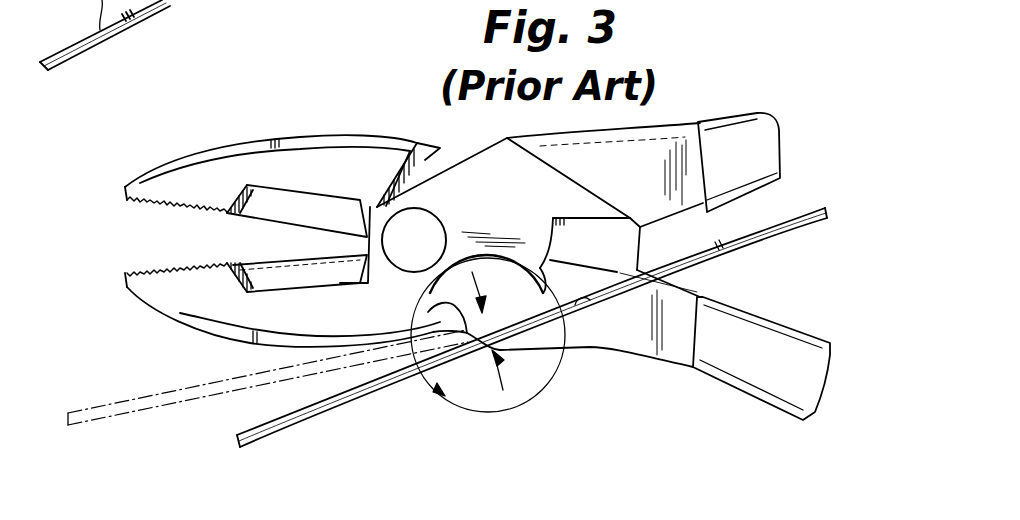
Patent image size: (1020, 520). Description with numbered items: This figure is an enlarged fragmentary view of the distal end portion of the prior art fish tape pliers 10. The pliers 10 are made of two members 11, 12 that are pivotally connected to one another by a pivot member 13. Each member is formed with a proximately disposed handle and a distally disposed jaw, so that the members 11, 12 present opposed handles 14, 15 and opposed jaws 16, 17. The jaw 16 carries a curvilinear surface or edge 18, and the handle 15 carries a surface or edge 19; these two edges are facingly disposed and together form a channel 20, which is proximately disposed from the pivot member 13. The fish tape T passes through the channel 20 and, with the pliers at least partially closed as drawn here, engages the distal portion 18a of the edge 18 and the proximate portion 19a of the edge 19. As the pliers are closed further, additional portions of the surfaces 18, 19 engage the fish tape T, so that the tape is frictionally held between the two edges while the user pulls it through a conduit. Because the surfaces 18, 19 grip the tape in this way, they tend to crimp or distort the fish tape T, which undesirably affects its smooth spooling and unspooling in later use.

The fish tape pliers 10 is at (333, 108).
The member 11 is at (223, 143).
The member 12 is at (180, 318).
The pivot member 13 is at (438, 232).
The handle 14 is at (778, 327).
The handle 15 is at (737, 132).
The jaw 16 is at (163, 175).
The jaw 17 is at (147, 274).
The curvilinear surface or edge 18 is at (513, 258).
The distal portion of edge 18a is at (428, 310).
The surface or edge 19 is at (583, 292).
The proximate portion of edge 19a is at (650, 217).
The channel 20 is at (488, 335).
The fish tape T is at (783, 230).